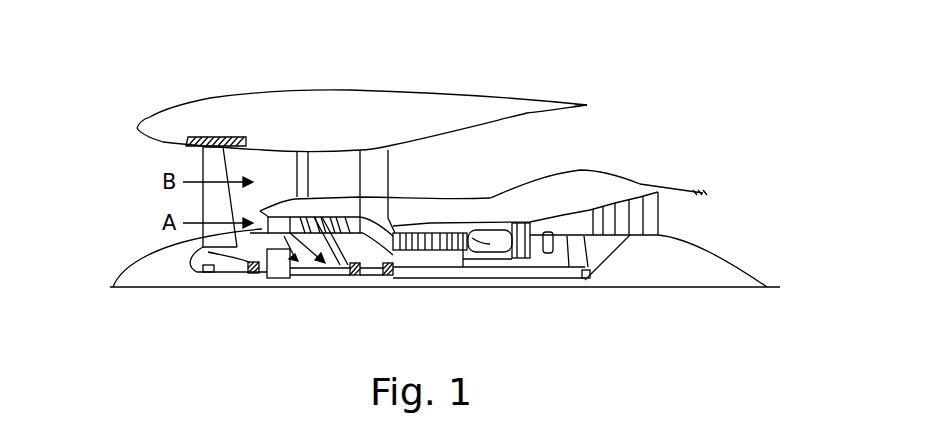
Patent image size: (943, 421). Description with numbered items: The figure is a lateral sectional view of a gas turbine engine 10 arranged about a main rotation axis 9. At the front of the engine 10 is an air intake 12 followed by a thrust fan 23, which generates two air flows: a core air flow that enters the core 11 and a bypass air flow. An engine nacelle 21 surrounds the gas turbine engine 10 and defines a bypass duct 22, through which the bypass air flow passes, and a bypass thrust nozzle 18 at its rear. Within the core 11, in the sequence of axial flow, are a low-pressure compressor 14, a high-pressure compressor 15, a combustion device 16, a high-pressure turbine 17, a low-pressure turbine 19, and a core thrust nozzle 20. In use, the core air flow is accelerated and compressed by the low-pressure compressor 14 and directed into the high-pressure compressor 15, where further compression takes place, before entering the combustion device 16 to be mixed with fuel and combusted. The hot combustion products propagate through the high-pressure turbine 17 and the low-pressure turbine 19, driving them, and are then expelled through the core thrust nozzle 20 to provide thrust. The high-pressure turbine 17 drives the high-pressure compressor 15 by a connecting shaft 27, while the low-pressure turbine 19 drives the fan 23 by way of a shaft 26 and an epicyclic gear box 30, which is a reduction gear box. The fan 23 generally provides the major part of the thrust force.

The main rotation axis 9 is at (680, 288).
The gas turbine engine 10 is at (184, 106).
The core 11 is at (502, 215).
The air intake 12 is at (141, 158).
The low-pressure compressor 14 is at (316, 215).
The high-pressure compressor 15 is at (440, 230).
The combustion device 16 is at (485, 262).
The high-pressure turbine 17 is at (538, 229).
The bypass thrust nozzle 18 is at (666, 103).
The low-pressure turbine 19 is at (632, 237).
The core thrust nozzle 20 is at (705, 222).
The engine nacelle 21 is at (372, 103).
The bypass duct 22 is at (570, 138).
The thrust fan 23 is at (192, 210).
The shaft 26 is at (410, 278).
The connecting shaft 27 is at (457, 270).
The epicyclic gear box 30 is at (277, 289).